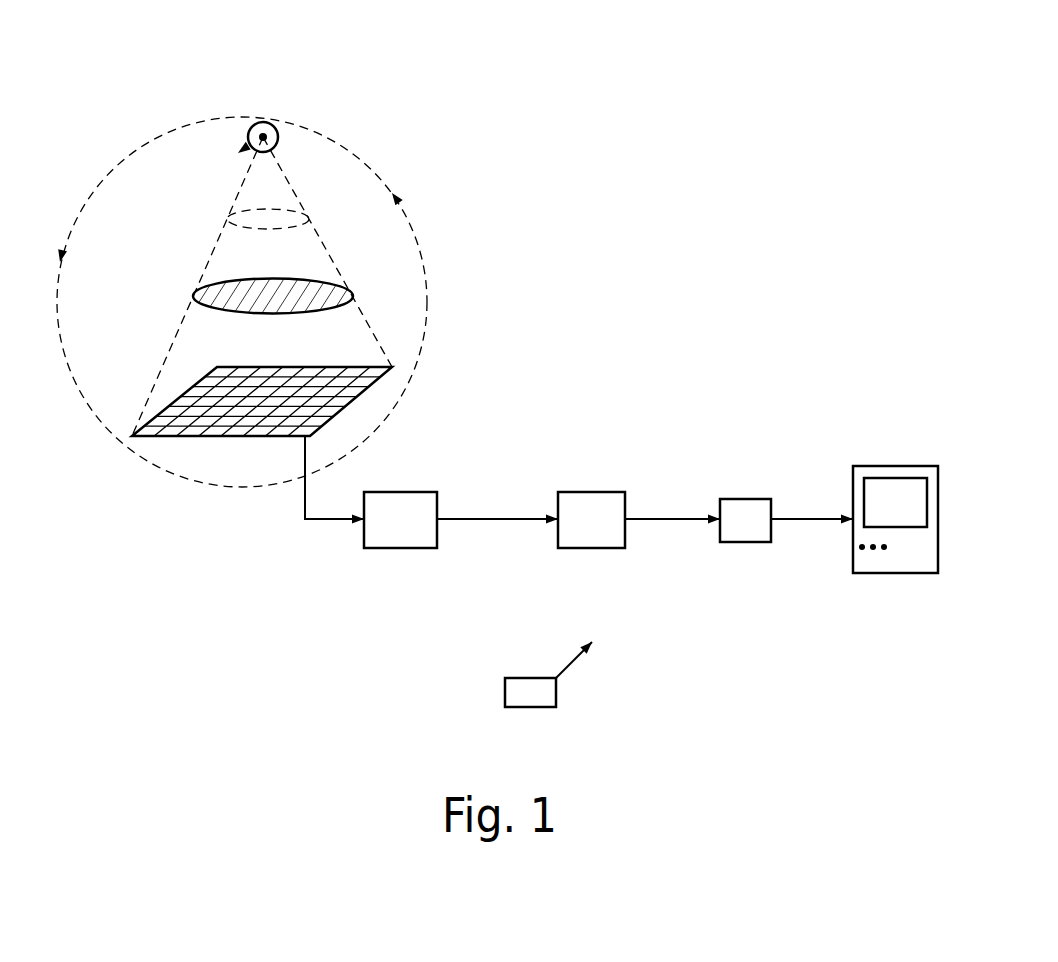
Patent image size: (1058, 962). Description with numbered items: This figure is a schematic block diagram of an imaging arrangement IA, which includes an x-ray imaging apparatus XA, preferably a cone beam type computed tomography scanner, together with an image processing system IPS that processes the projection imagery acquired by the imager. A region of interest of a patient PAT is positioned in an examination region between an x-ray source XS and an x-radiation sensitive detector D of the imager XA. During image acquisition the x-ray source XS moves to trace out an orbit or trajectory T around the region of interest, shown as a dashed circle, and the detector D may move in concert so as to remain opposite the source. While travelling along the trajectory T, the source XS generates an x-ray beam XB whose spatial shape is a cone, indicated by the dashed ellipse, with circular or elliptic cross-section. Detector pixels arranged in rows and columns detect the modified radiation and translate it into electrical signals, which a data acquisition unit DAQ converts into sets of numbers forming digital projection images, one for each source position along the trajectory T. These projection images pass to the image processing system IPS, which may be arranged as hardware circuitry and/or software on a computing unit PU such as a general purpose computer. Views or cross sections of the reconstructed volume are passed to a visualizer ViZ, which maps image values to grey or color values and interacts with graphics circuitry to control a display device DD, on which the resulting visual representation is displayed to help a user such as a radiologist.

The imaging arrangement IA is at (627, 102).
The x-ray imaging apparatus XA is at (375, 143).
The trajectory T is at (413, 232).
The x-ray source XS is at (267, 125).
The x-ray beam XB is at (265, 182).
The patient PAT is at (223, 308).
The x-radiation sensitive detector D is at (370, 403).
The data acquisition unit DAQ is at (400, 520).
The image processing system IPS is at (591, 520).
The visualizer ViZ is at (742, 527).
The display device DD is at (893, 466).
The computing unit PU is at (530, 693).